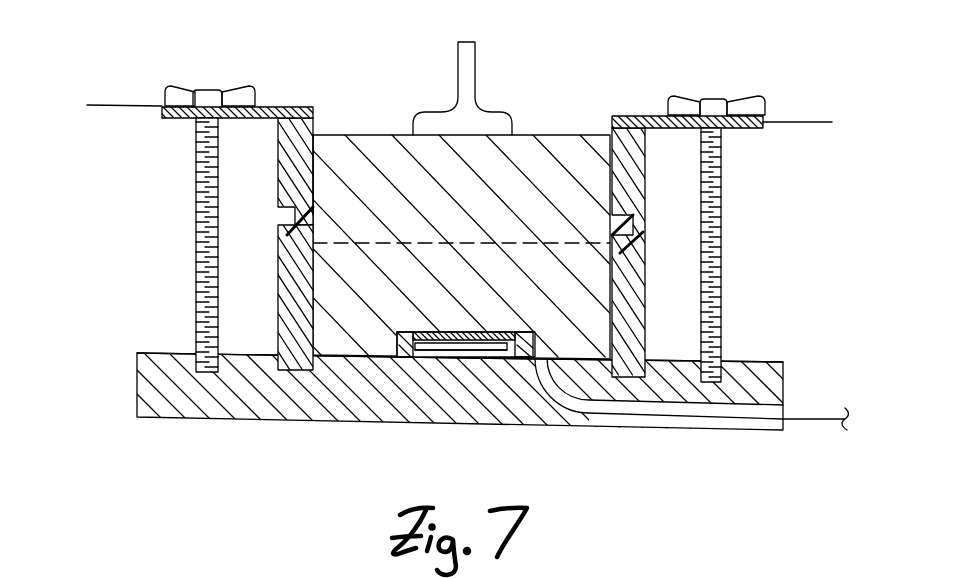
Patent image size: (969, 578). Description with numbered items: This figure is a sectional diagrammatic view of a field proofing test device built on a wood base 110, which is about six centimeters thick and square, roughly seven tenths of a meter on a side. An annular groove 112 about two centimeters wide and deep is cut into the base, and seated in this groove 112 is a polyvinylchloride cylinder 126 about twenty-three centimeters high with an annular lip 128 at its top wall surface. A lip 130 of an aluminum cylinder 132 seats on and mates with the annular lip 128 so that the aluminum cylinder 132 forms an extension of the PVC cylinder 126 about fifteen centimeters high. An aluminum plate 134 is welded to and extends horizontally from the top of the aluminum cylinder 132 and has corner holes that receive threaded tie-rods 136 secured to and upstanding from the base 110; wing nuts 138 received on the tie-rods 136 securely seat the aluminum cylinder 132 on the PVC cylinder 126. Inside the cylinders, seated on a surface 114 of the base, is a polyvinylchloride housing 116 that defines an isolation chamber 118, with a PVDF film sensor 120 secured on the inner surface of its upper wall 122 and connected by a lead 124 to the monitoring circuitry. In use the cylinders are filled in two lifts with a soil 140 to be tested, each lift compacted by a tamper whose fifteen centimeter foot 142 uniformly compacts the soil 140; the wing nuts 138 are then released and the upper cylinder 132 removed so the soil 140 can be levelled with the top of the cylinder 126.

The wood base 110 is at (137, 381).
The groove 112 is at (280, 357).
The surface 114 is at (557, 358).
The polyvinylchloride housing 116 is at (430, 353).
The isolation chamber 118 is at (492, 352).
The PVDF film sensor 120 is at (478, 351).
The upper wall 122 is at (397, 342).
The lead 124 is at (813, 419).
The polyvinylchloride cylinder 126 is at (278, 283).
The annular lip 128 is at (315, 205).
The lip 130 is at (278, 213).
The aluminum cylinder 132 is at (313, 155).
The aluminum plate 134 is at (277, 107).
The threaded tie-rods 136 is at (196, 183).
The wing nuts 138 is at (165, 83).
The soil 140 is at (497, 203).
The foot 142 is at (495, 111).